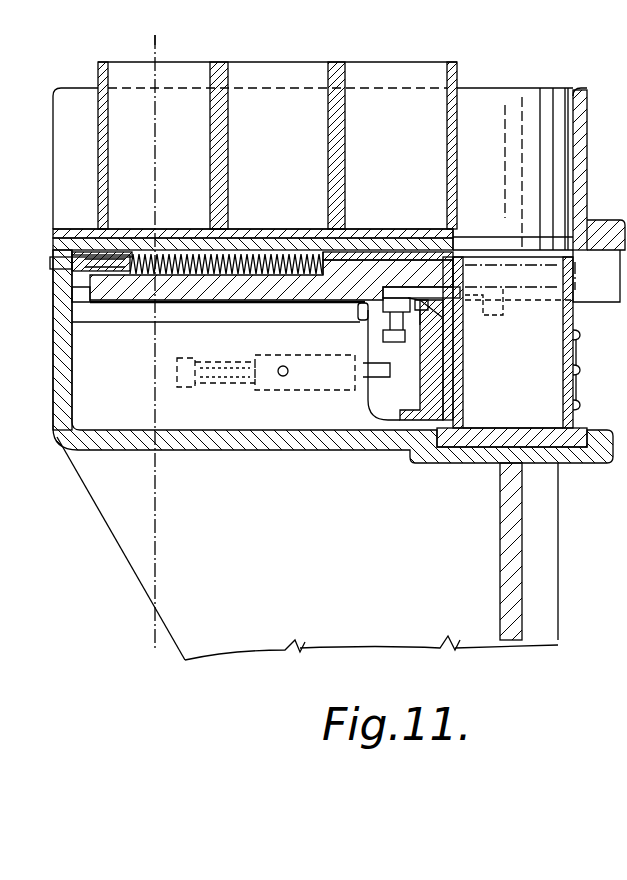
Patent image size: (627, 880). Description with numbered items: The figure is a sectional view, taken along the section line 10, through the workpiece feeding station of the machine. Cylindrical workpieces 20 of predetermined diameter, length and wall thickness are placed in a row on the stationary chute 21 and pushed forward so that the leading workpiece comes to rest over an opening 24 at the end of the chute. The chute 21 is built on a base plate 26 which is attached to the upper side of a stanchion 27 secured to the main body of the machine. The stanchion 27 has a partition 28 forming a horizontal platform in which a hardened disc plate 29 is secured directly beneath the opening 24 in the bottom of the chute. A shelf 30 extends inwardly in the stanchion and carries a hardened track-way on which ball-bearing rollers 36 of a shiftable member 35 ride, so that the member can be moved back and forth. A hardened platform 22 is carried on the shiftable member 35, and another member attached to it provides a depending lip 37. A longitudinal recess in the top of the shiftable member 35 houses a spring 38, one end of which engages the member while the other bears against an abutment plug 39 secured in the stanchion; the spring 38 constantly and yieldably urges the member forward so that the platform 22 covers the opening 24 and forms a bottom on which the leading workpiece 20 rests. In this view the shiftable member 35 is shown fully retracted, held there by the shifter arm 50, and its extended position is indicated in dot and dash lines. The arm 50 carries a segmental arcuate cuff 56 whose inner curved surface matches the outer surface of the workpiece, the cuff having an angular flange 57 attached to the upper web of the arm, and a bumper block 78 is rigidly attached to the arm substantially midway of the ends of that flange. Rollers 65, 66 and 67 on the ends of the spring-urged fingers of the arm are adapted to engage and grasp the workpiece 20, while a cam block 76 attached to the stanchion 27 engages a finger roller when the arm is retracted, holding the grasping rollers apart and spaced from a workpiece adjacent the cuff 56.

The section line 10 is at (144, 34).
The cylindrical workpiece 20 is at (224, 74).
The stationary chute 21 is at (62, 167).
The platform 22 is at (376, 253).
The opening 24 is at (477, 248).
The base plate 26 is at (60, 247).
The stanchion 27 is at (60, 383).
The partition 28 is at (246, 440).
The hardened disc plate 29 is at (482, 433).
The shelf 30 is at (148, 312).
The shiftable member 35 is at (228, 292).
The ball-bearing rollers 36 is at (413, 252).
The depending lip 37 is at (360, 312).
The spring 38 is at (258, 256).
The abutment plug 39 is at (52, 266).
The arm 50 is at (405, 427).
The cuff 56 is at (448, 372).
The flange 57 is at (457, 318).
The roller 65 is at (581, 336).
The roller 66 is at (581, 370).
The roller 67 is at (581, 405).
The cam block 76 is at (388, 379).
The bumper block 78 is at (440, 292).